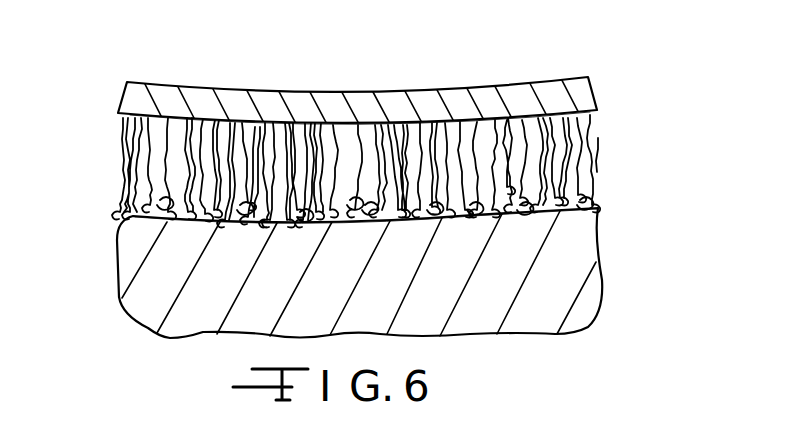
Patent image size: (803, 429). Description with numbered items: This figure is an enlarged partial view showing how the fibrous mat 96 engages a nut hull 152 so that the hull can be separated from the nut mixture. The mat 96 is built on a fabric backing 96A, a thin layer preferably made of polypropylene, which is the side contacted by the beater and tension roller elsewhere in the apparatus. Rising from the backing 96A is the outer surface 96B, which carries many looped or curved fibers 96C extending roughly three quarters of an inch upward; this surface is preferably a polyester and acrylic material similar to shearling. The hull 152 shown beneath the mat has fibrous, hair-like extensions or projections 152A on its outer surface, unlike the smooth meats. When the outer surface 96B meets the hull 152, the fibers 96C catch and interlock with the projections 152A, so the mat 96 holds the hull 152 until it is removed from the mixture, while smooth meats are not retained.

The fibrous mat 96 is at (381, 67).
The fabric backing 96A is at (488, 100).
The outer surface 96B is at (166, 118).
The fibers 96C is at (593, 130).
The hull 152 is at (413, 243).
The projections 152A is at (590, 190).